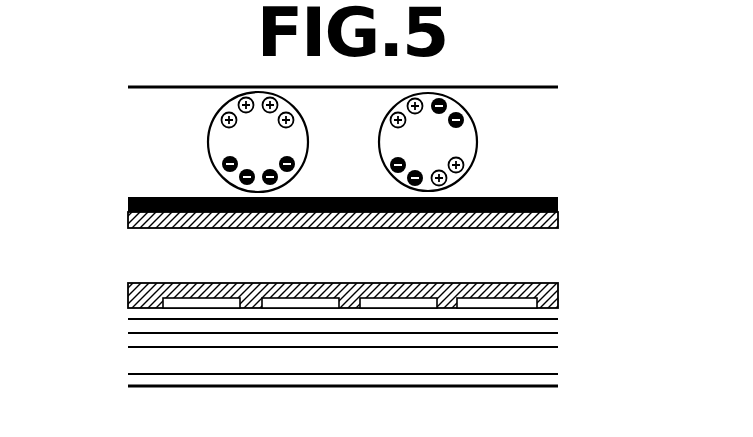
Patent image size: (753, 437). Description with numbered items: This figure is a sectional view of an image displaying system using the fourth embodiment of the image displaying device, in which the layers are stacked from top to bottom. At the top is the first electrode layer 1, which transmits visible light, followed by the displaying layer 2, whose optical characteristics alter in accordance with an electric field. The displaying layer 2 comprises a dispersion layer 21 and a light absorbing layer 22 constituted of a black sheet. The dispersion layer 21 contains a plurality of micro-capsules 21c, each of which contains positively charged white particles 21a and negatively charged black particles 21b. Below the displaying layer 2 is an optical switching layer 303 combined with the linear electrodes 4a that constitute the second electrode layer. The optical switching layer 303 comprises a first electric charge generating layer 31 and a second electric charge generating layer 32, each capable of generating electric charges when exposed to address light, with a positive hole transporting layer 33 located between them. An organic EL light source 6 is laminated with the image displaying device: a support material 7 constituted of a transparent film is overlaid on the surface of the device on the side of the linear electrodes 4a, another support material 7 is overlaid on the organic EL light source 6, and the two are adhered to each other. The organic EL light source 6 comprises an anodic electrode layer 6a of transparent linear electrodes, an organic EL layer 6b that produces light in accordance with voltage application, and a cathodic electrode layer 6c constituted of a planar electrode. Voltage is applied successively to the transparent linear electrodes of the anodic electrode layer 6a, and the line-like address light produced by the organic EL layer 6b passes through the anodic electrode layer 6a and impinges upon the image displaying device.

The first electrode layer 1 is at (537, 86).
The displaying layer 2 is at (570, 88).
The dispersion layer 21 is at (137, 157).
The positively charged white particles 21a is at (293, 110).
The negatively charged black particles 21b is at (297, 152).
The micro-capsule 21c is at (210, 128).
The light absorbing layer 22 is at (128, 204).
The first electric charge generating layer 31 is at (128, 222).
The second electric charge generating layer 32 is at (128, 295).
The positive hole transporting layer 33 is at (138, 265).
The optical switching layer 303 is at (570, 197).
The linear electrode 4a is at (557, 306).
The organic EL light source 6 is at (120, 338).
The anodic electrode layer 6a is at (553, 343).
The organic EL layer 6b is at (553, 361).
The cathodic electrode layer 6c is at (553, 382).
The support material 7 is at (128, 329).